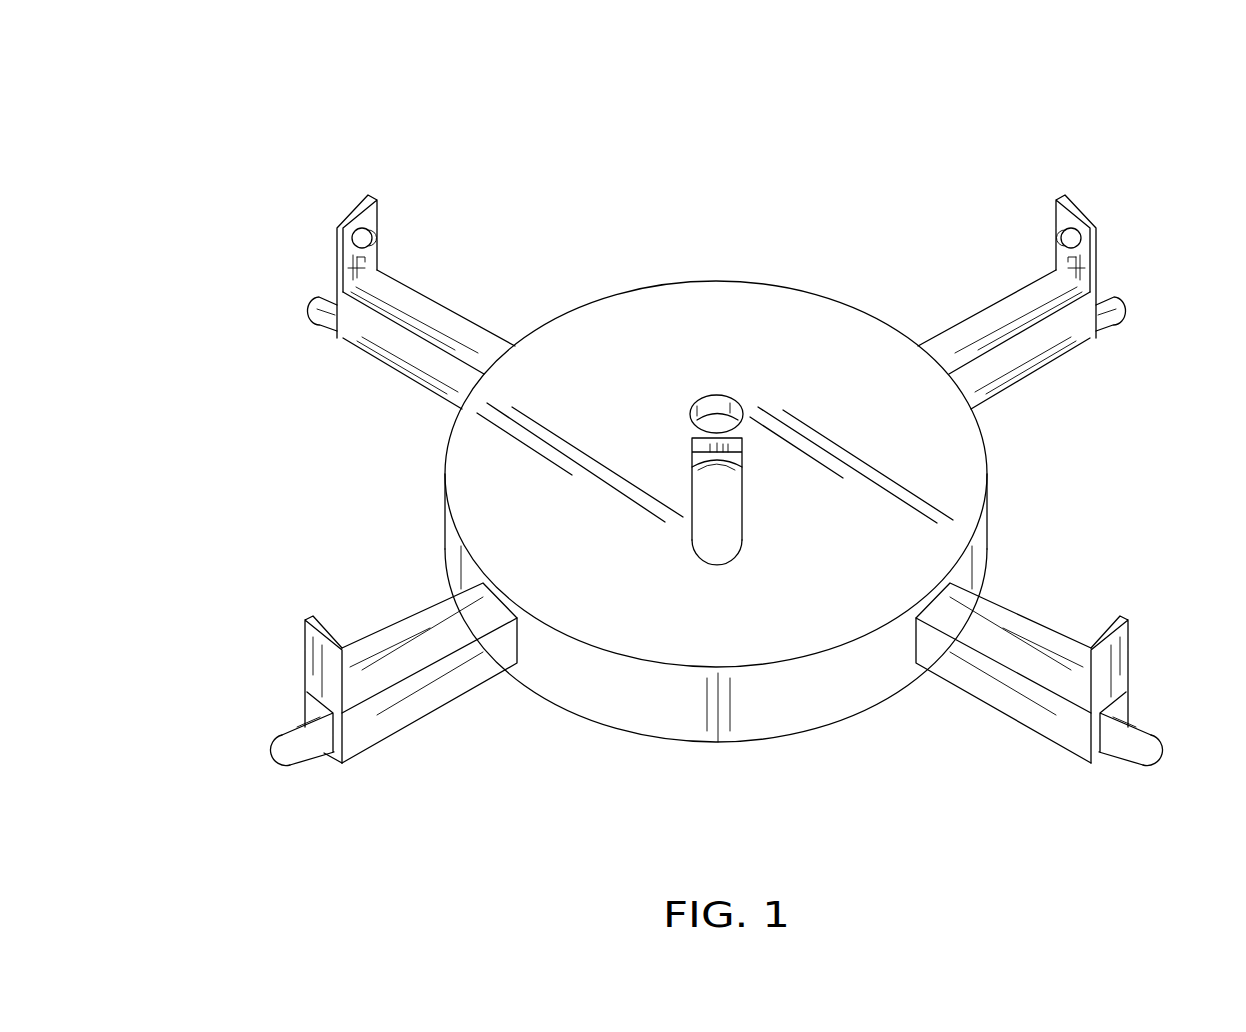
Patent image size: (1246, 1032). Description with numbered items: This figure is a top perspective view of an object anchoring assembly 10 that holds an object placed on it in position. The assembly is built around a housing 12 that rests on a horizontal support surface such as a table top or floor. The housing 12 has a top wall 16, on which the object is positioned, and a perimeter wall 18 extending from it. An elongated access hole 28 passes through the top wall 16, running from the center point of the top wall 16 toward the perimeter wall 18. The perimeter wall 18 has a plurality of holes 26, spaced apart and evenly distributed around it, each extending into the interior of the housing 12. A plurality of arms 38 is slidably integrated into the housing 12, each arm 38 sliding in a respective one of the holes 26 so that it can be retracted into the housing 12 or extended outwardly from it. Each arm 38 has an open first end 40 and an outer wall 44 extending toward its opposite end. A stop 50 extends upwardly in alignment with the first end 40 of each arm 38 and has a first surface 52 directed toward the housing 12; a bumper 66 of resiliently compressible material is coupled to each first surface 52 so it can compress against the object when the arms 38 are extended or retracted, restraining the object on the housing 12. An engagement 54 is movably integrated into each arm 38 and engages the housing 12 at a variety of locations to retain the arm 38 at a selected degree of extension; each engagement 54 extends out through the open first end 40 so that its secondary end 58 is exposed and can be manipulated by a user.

The object anchoring assembly 10 is at (812, 125).
The housing 12 is at (716, 505).
The top wall 16 is at (678, 318).
The perimeter wall 18 is at (618, 687).
The holes 26 is at (498, 609).
The access hole 28 is at (742, 465).
The arms 38 is at (433, 297).
The first end 40 is at (333, 760).
The outer wall 44 is at (1057, 668).
The stop 50 is at (337, 250).
The first surface 52 is at (365, 268).
The engagements 54 is at (293, 738).
The secondary end 58 is at (285, 757).
The bumpers 66 is at (373, 230).